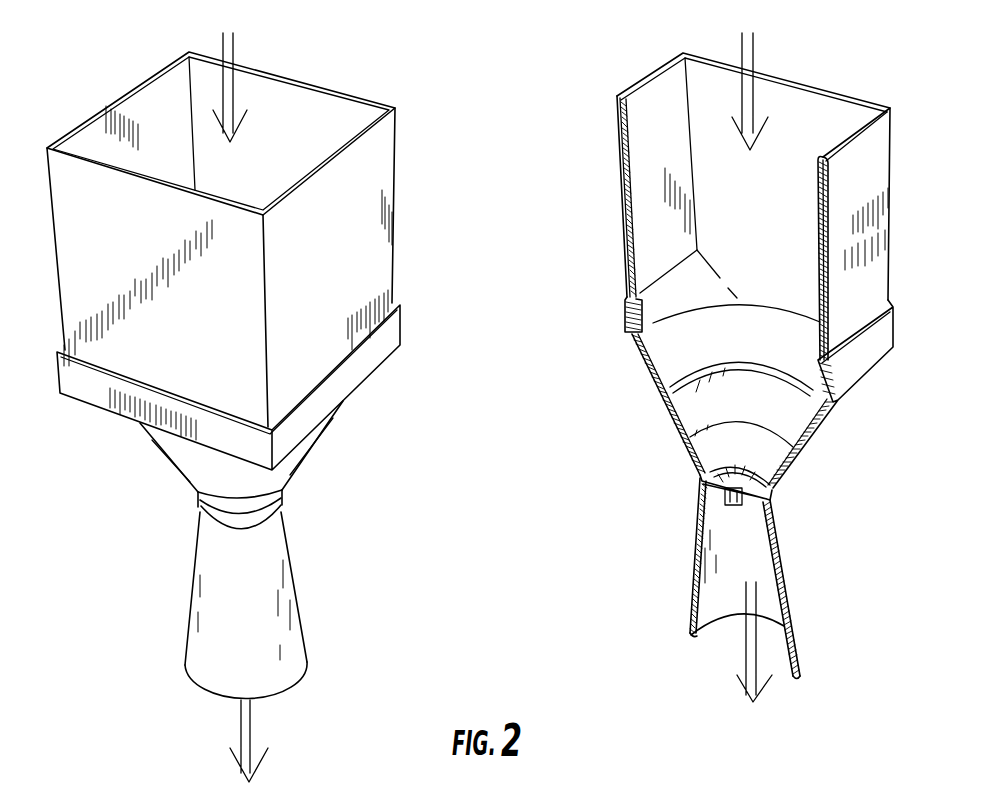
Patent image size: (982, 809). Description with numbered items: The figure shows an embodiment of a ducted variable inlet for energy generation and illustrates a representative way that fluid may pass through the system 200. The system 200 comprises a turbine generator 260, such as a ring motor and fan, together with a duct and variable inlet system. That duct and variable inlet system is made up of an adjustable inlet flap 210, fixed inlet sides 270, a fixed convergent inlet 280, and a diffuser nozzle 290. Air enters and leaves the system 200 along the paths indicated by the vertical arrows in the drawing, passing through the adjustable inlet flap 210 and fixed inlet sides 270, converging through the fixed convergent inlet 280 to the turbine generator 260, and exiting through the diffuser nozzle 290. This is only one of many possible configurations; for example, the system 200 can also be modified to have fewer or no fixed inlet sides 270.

The system 200 is at (134, 712).
The adjustable inlet flap 210 is at (361, 177).
The fixed inlet sides 270 is at (220, 293).
The fixed convergent inlet 280 is at (634, 388).
The turbine generator 260 is at (684, 476).
The diffuser nozzle 290 is at (326, 640).